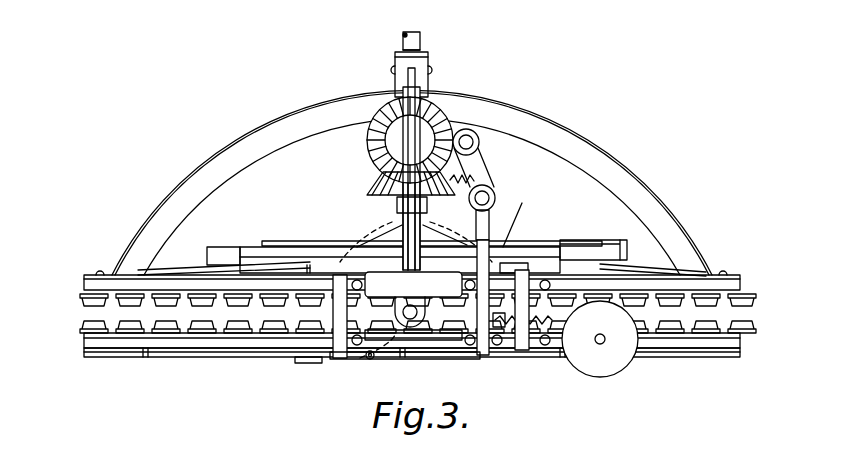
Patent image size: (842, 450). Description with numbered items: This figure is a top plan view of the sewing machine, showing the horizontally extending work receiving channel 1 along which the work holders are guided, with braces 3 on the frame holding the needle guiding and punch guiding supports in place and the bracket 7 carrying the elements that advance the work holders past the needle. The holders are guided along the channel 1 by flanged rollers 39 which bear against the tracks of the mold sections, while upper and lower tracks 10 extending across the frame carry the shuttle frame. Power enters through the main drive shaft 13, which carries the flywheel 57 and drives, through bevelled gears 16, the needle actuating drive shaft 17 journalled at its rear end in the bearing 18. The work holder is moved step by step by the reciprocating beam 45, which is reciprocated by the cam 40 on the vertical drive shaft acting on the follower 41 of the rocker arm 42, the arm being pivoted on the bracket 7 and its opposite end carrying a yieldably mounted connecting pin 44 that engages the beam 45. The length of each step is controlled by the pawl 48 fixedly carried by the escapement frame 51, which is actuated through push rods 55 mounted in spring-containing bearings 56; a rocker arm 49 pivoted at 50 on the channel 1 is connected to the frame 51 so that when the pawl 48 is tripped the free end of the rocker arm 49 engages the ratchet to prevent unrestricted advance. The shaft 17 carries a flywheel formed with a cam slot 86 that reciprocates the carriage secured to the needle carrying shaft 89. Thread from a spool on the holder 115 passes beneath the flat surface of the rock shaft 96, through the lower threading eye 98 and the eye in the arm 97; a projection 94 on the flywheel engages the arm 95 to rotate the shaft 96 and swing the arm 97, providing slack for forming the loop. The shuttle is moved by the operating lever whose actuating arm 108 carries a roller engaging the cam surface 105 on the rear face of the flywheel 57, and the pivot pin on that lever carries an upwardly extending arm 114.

The work receiving channel 1 is at (96, 341).
The braces 3 is at (250, 152).
The bracket 7 is at (488, 212).
The tracks 10 is at (238, 350).
The main drive shaft 13 is at (403, 36).
The bevelled gears 16 is at (380, 186).
The needle actuating drive shaft 17 is at (422, 52).
The bearing 18 is at (397, 60).
The flanged rollers 39 is at (200, 306).
The cam 40 is at (480, 176).
The follower 41 is at (468, 157).
The rocker arm 42 is at (448, 193).
The connecting pin 44 is at (521, 217).
The reciprocating beam 45 is at (182, 272).
The pawl 48 is at (410, 326).
The rocker arm 49 is at (380, 360).
The pivot 50 is at (368, 358).
The escapement frame 51 is at (446, 360).
The push rods 55 is at (390, 250).
The bearings 56 is at (345, 312).
The flywheel 57 is at (291, 241).
The cam slot 86 is at (207, 255).
The needle carrying shaft 89 is at (410, 310).
The projection 94 is at (248, 262).
The arm 95 is at (508, 270).
The rock shaft 96 is at (532, 277).
The arm 97 is at (520, 348).
The lower threading eye 98 is at (442, 312).
The cam surface 105 is at (345, 240).
The actuating arm 108 is at (442, 196).
The upwardly extending arm 114 is at (308, 365).
The holder 115 is at (613, 364).